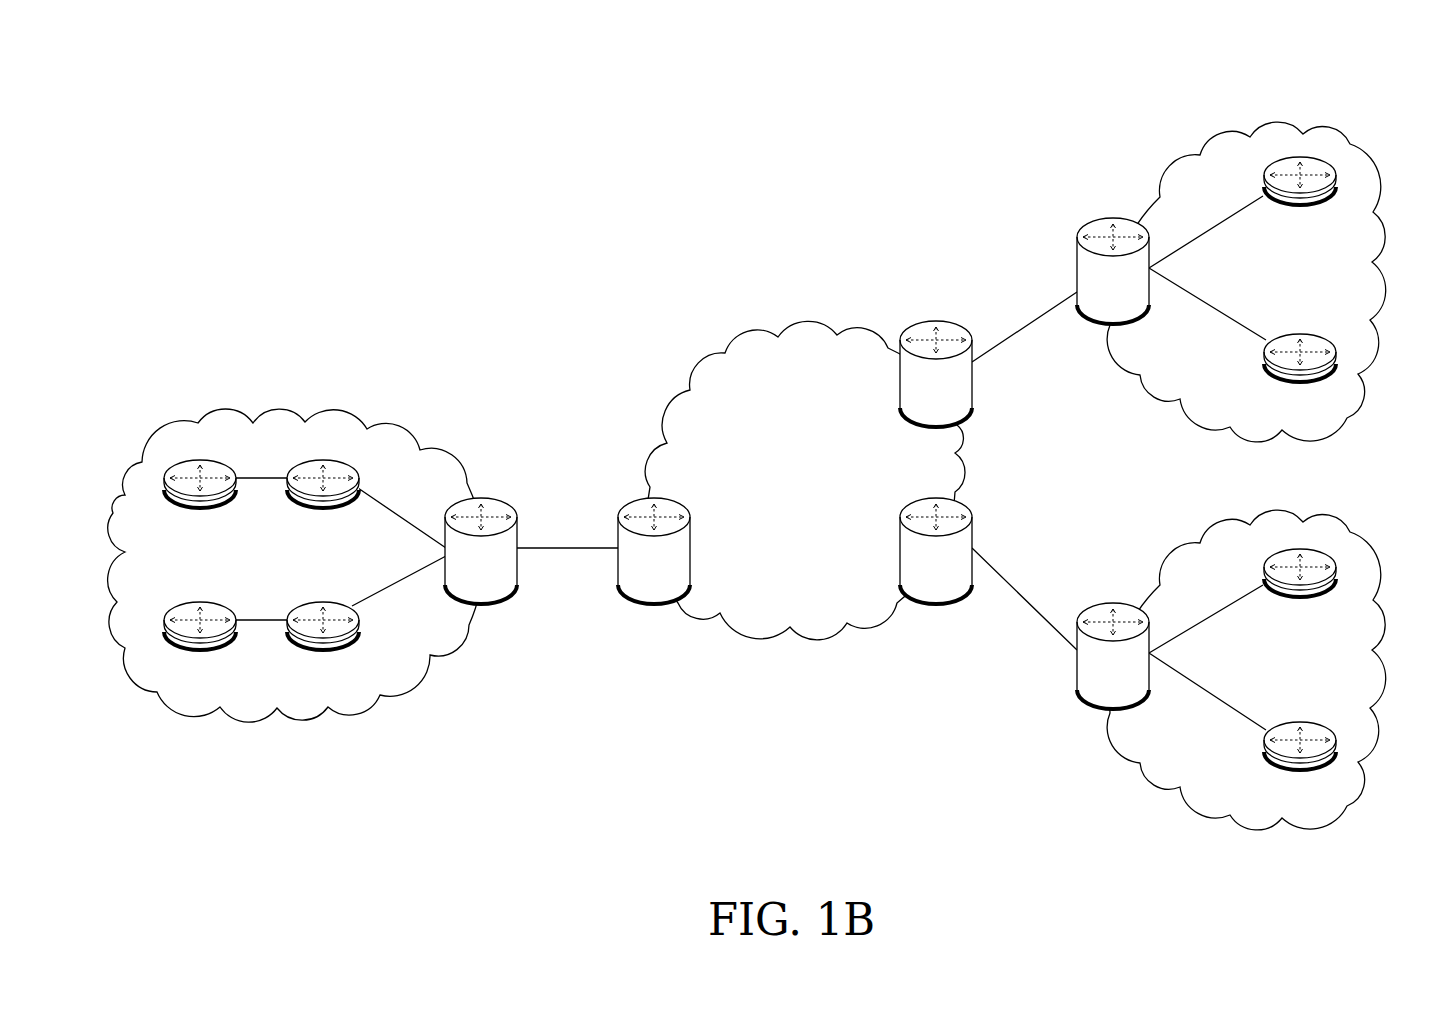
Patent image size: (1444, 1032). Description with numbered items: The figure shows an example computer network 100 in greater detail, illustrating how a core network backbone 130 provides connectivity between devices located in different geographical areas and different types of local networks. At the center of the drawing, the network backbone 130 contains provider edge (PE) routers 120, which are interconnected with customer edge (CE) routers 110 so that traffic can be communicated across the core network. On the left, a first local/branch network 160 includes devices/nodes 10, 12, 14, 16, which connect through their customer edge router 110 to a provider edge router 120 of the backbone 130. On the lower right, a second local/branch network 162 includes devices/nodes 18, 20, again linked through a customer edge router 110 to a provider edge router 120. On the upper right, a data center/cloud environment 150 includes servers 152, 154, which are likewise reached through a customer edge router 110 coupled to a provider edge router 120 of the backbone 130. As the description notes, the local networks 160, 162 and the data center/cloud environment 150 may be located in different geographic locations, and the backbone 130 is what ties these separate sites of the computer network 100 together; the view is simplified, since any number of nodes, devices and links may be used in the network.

The computer network 100 is at (1338, 62).
The customer edge (CE) router 110 is at (463, 586).
The provider edge (PE) router 120 is at (636, 587).
The network backbone 130 is at (784, 502).
The data center/cloud environment 150 is at (1215, 130).
The local/branch network 160 is at (338, 405).
The local/branch network 162 is at (1135, 763).
The device/node 10 is at (200, 499).
The device/node 12 is at (323, 499).
The device/node 14 is at (200, 641).
The device/node 16 is at (323, 641).
The device/node 18 is at (1300, 762).
The device/node 20 is at (1300, 587).
The server 152 is at (1300, 197).
The server 154 is at (1300, 375).